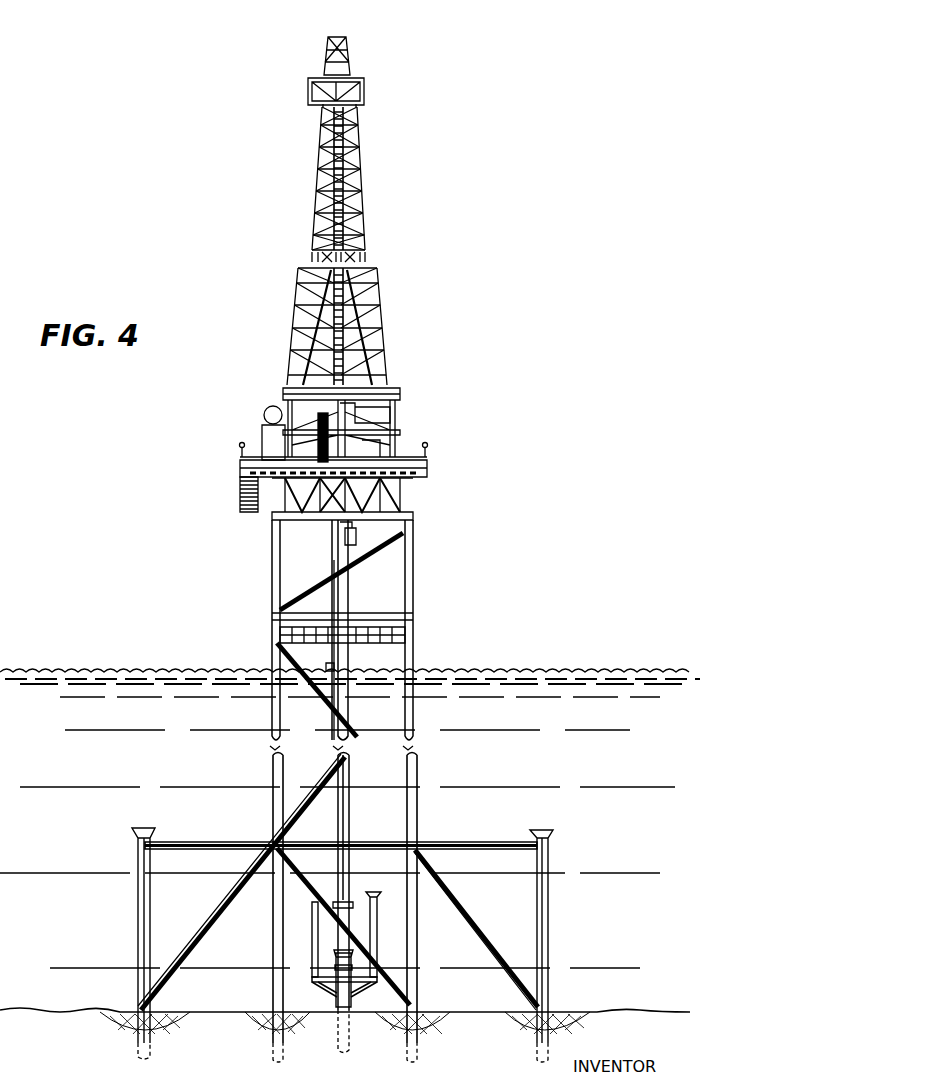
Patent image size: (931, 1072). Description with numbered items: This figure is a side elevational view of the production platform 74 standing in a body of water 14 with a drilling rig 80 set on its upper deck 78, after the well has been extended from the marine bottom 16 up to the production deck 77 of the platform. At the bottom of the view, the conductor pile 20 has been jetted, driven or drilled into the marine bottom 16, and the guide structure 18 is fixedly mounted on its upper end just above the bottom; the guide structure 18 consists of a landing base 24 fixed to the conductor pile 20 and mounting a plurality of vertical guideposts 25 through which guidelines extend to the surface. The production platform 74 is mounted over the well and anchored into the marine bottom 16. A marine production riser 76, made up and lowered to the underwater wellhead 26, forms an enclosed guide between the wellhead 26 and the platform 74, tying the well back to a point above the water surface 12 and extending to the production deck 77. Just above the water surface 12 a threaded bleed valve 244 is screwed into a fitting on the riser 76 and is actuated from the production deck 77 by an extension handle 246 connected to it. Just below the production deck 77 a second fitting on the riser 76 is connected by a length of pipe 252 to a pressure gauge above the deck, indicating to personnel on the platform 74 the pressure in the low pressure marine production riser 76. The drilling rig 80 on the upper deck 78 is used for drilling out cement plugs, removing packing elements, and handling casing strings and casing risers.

The water surface 12 is at (125, 670).
The body of water 14 is at (516, 769).
The marine bottom 16 is at (597, 1013).
The guide structure 18 is at (371, 986).
The conductor pile 20 is at (338, 1000).
The landing base 24 is at (314, 980).
The vertical guideposts 25 is at (312, 912).
The underwater wellhead 26 is at (338, 945).
The production platform 74 is at (428, 586).
The marine production riser 76 is at (349, 584).
The production deck 77 is at (413, 516).
The upper deck 78 is at (427, 470).
The drilling rig 80 is at (385, 342).
The bleed valve 244 is at (334, 667).
The extension handle 246 is at (328, 558).
The length of pipe 252 is at (350, 541).